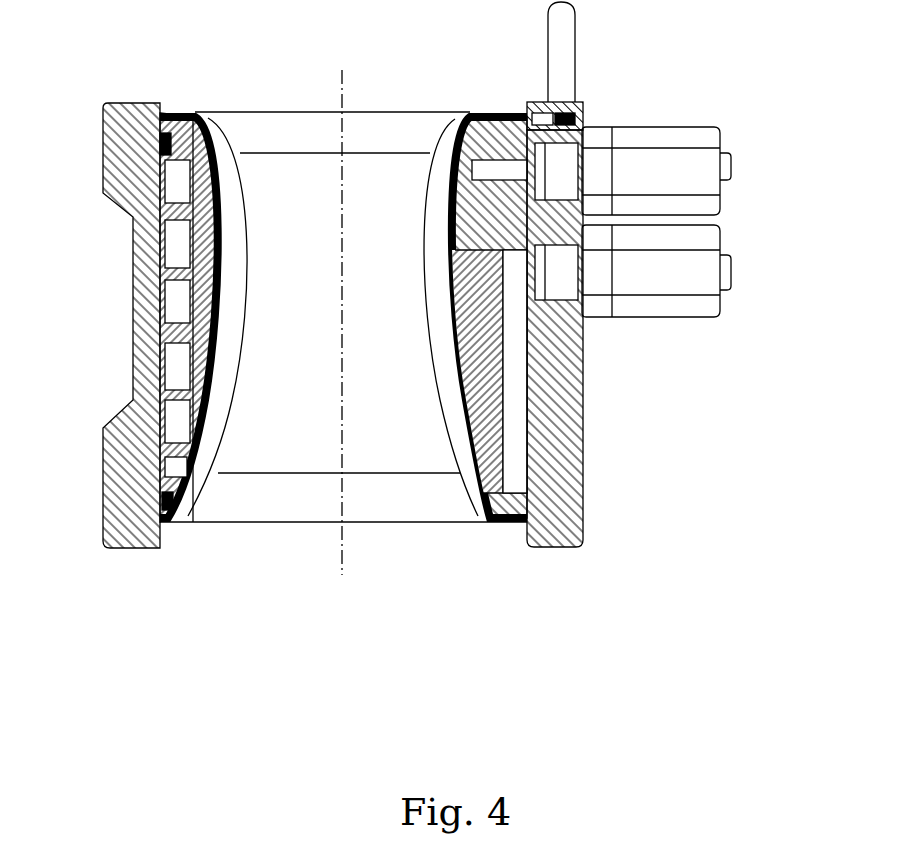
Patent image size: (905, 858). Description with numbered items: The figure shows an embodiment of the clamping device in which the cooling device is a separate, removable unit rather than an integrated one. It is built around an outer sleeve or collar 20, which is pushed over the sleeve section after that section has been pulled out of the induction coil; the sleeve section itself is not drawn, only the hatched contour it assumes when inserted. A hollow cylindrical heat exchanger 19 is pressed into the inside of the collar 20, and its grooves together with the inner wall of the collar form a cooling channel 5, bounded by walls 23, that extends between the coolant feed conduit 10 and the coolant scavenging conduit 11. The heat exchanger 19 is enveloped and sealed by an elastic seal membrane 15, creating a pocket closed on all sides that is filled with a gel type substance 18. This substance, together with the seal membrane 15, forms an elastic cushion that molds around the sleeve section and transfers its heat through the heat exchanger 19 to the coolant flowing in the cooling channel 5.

The cooling channel 5 is at (175, 298).
The coolant feed conduit 10 is at (712, 140).
The coolant scavenging conduit 11 is at (712, 238).
The seal membrane 15 is at (447, 213).
The gel type substance 18 is at (452, 113).
The heat exchanger 19 is at (190, 112).
The collar 20 is at (580, 463).
The wall of the cooling channel 23 is at (187, 160).